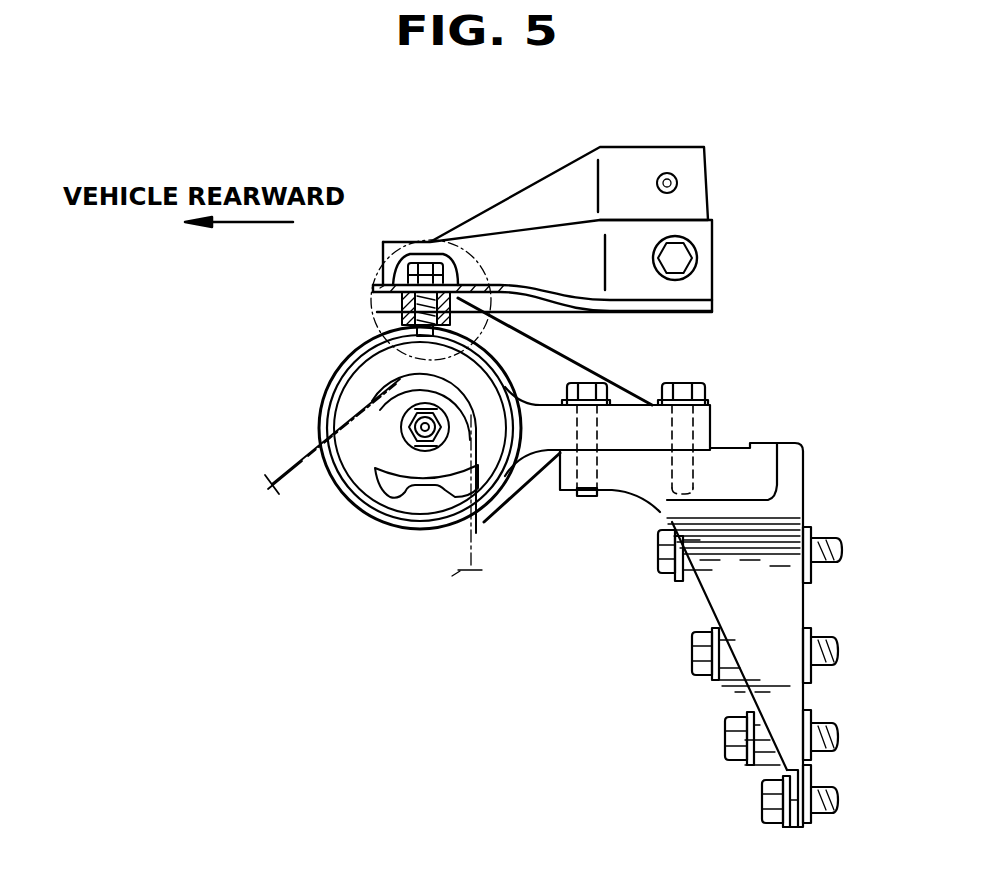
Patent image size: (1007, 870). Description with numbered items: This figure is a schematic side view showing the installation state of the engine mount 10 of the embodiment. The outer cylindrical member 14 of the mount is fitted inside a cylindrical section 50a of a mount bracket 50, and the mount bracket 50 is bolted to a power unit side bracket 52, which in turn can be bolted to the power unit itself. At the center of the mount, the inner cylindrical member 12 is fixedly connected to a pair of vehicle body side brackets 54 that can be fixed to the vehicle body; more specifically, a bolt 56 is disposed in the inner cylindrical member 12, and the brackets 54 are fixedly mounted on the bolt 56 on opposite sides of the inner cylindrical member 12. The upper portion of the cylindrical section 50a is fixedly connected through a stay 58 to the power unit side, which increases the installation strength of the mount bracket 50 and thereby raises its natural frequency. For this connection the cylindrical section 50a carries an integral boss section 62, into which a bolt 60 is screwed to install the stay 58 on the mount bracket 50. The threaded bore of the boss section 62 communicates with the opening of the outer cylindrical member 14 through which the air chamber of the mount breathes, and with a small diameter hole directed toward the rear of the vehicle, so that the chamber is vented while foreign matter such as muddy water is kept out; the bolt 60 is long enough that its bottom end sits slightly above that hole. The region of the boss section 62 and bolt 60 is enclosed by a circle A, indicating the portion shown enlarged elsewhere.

The engine mount 10 is at (372, 394).
The inner cylindrical member 12 is at (427, 452).
The outer cylindrical member 14 is at (493, 495).
The mount bracket 50 is at (647, 410).
The cylindrical section 50a is at (380, 512).
The power unit side bracket 52 is at (785, 615).
The vehicle body side brackets 54 is at (316, 440).
The bolt 56 is at (408, 428).
The stay 58 is at (508, 242).
The bolt 60 is at (420, 257).
The boss section 62 is at (373, 289).
The circle A is at (370, 326).